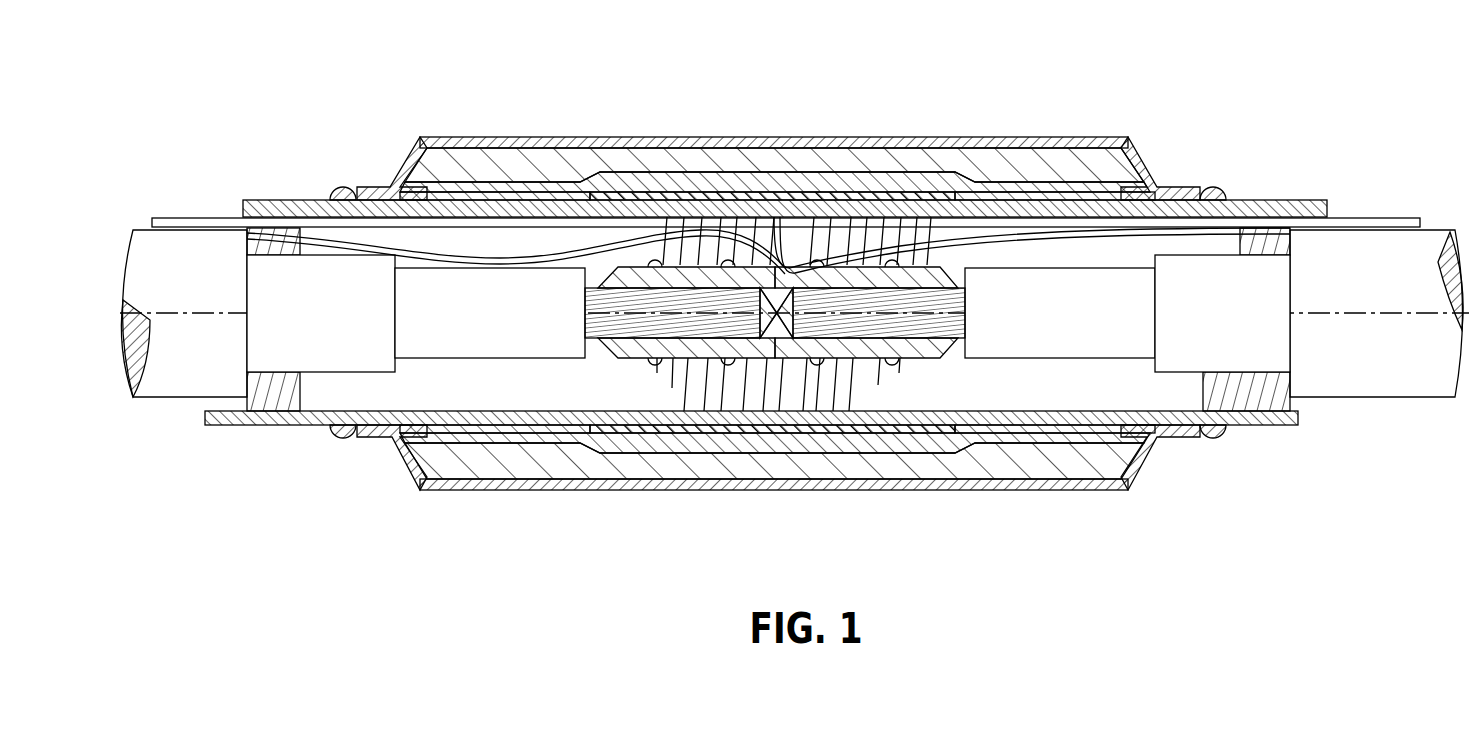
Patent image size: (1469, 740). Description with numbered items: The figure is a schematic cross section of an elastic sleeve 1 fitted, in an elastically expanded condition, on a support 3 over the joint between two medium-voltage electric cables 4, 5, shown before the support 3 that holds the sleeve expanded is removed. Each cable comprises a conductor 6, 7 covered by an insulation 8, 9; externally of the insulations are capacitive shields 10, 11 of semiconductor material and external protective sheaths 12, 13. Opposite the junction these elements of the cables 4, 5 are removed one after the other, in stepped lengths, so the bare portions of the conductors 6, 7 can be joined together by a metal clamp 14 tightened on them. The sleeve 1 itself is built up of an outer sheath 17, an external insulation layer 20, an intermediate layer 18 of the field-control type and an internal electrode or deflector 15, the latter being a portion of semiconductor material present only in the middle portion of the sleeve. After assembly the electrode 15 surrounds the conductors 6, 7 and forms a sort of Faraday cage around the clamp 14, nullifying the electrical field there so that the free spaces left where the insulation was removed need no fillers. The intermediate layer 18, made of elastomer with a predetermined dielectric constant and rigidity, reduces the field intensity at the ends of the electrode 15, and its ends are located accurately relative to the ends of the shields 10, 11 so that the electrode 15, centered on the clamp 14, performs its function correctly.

The elastic sleeve 1 is at (1095, 108).
The support 3 is at (300, 456).
The electric cable 4 is at (195, 368).
The electric cable 5 is at (1385, 400).
The conductor 6 is at (594, 322).
The conductor 7 is at (932, 320).
The insulation 8 is at (510, 340).
The insulation 9 is at (1045, 333).
The capacitive shield 10 is at (373, 345).
The capacitive shield 11 is at (1167, 332).
The external protective sheath 12 is at (190, 243).
The external protective sheath 13 is at (1390, 246).
The metal clamp 14 is at (650, 352).
The internal electrode 15 is at (862, 193).
The outer sheath 17 is at (755, 143).
The intermediate layer 18 is at (648, 178).
The external insulation layer 20 is at (538, 163).